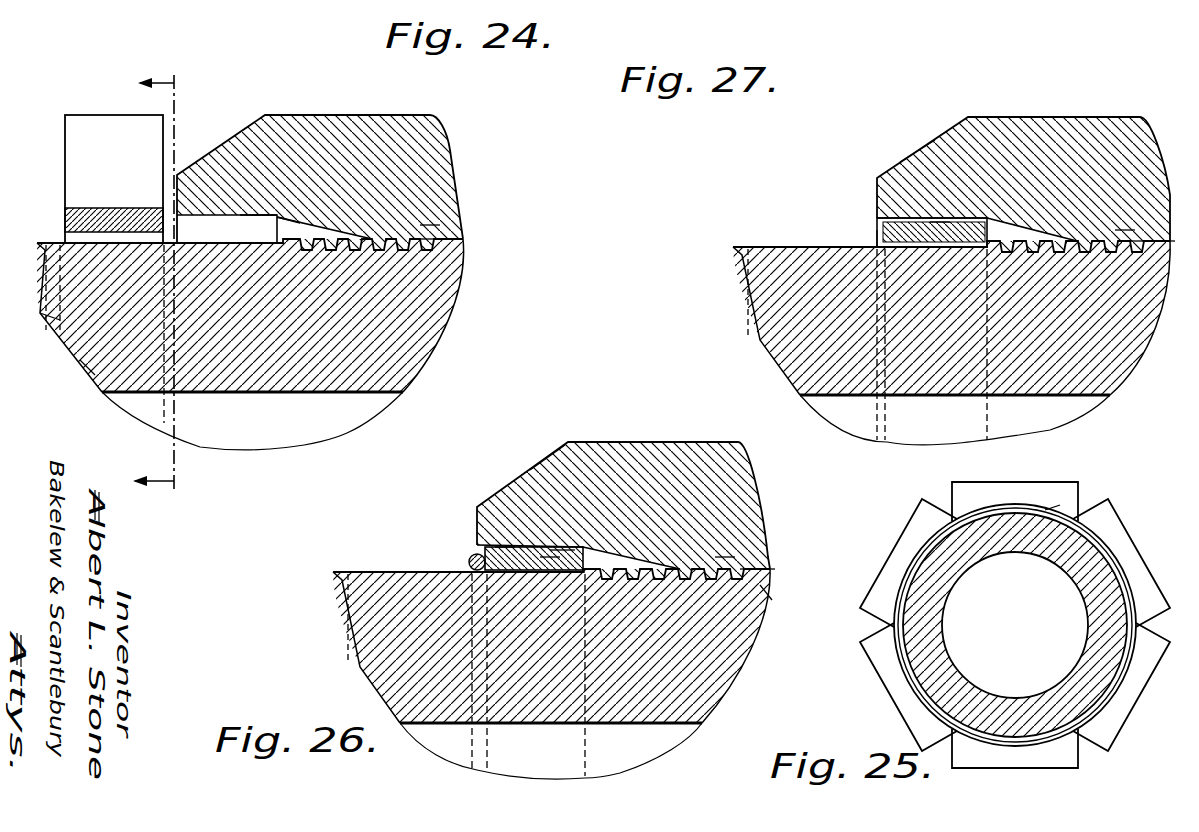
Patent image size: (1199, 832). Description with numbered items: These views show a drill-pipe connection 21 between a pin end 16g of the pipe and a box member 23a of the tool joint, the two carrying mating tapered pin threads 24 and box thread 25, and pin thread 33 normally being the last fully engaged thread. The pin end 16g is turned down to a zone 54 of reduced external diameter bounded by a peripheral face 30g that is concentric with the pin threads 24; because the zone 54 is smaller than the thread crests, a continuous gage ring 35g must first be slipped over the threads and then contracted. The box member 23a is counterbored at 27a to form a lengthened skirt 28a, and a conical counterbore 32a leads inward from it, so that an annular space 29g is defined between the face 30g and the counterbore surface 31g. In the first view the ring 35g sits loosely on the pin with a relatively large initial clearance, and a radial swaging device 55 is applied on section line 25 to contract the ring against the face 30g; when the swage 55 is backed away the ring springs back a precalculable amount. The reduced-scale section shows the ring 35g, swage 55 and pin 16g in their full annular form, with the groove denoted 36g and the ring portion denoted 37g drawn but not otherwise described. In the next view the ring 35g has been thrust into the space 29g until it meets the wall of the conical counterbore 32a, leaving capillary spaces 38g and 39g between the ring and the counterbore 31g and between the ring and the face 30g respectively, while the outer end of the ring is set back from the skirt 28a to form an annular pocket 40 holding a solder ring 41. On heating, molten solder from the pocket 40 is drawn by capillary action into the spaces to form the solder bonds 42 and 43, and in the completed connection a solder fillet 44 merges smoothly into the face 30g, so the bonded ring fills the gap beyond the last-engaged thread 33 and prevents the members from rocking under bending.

In FIG. 24, the pin end 16g is at (347, 375).
In FIG. 27, the pin end 16g is at (1042, 380).
In FIG. 26, the pin end 16g is at (658, 705).
In FIG. 25, the pin end 16g is at (975, 545).
In FIG. 24, the box member 23a is at (386, 136).
In FIG. 27, the box member 23a is at (1098, 145).
In FIG. 26, the box member 23a is at (688, 466).
In FIG. 24, the radial swaging device 55 is at (75, 137).
In FIG. 25, the radial swaging device 55 is at (1065, 492).
In FIG. 24, the sealing ring 36g is at (116, 226).
In FIG. 26, the sealing ring 36g is at (563, 550).
In FIG. 24, the box thread 25 is at (463, 237).
In FIG. 27, the box thread 25 is at (1170, 245).
In FIG. 26, the box thread 25 is at (768, 580).
In FIG. 24, the peripheral face 30g is at (210, 240).
In FIG. 27, the peripheral face 30g is at (875, 247).
In FIG. 26, the peripheral face 30g is at (503, 573).
In FIG. 25, the peripheral face 30g is at (1052, 508).
In FIG. 24, the counterbore 31g is at (245, 238).
In FIG. 24, the space 29g is at (262, 215).
In FIG. 24, the counterbore 27a is at (282, 216).
In FIG. 24, the conical counterbore 32a is at (293, 228).
In FIG. 24, the connection 21 is at (433, 220).
In FIG. 27, the connection 21 is at (1123, 228).
In FIG. 26, the connection 21 is at (725, 555).
In FIG. 24, the pin threads 24 is at (430, 246).
In FIG. 27, the pin threads 24 is at (1133, 250).
In FIG. 26, the pin threads 24 is at (750, 580).
In FIG. 24, the last fully-engaged pin thread 33 is at (453, 250).
In FIG. 27, the last fully-engaged pin thread 33 is at (1157, 253).
In FIG. 26, the last fully-engaged pin thread 33 is at (770, 600).
In FIG. 24, the ring 35g is at (55, 330).
In FIG. 27, the ring 35g is at (938, 222).
In FIG. 26, the ring 35g is at (550, 557).
In FIG. 25, the ring 35g is at (1010, 510).
In FIG. 24, the pipe shoulder 37g is at (88, 373).
In FIG. 26, the pipe shoulder 37g is at (570, 574).
In FIG. 24, the zone 54 is at (245, 256).
In FIG. 27, the skirt 28a is at (918, 170).
In FIG. 26, the skirt 28a is at (547, 473).
In FIG. 27, the solder bond 42 is at (965, 225).
In FIG. 27, the solder fillet 44 is at (877, 240).
In FIG. 27, the solder bond 43 is at (953, 248).
In FIG. 26, the capillary space 38g is at (505, 547).
In FIG. 26, the annular pocket 40 is at (482, 558).
In FIG. 26, the solder ring 41 is at (470, 565).
In FIG. 26, the capillary space 39g is at (513, 574).